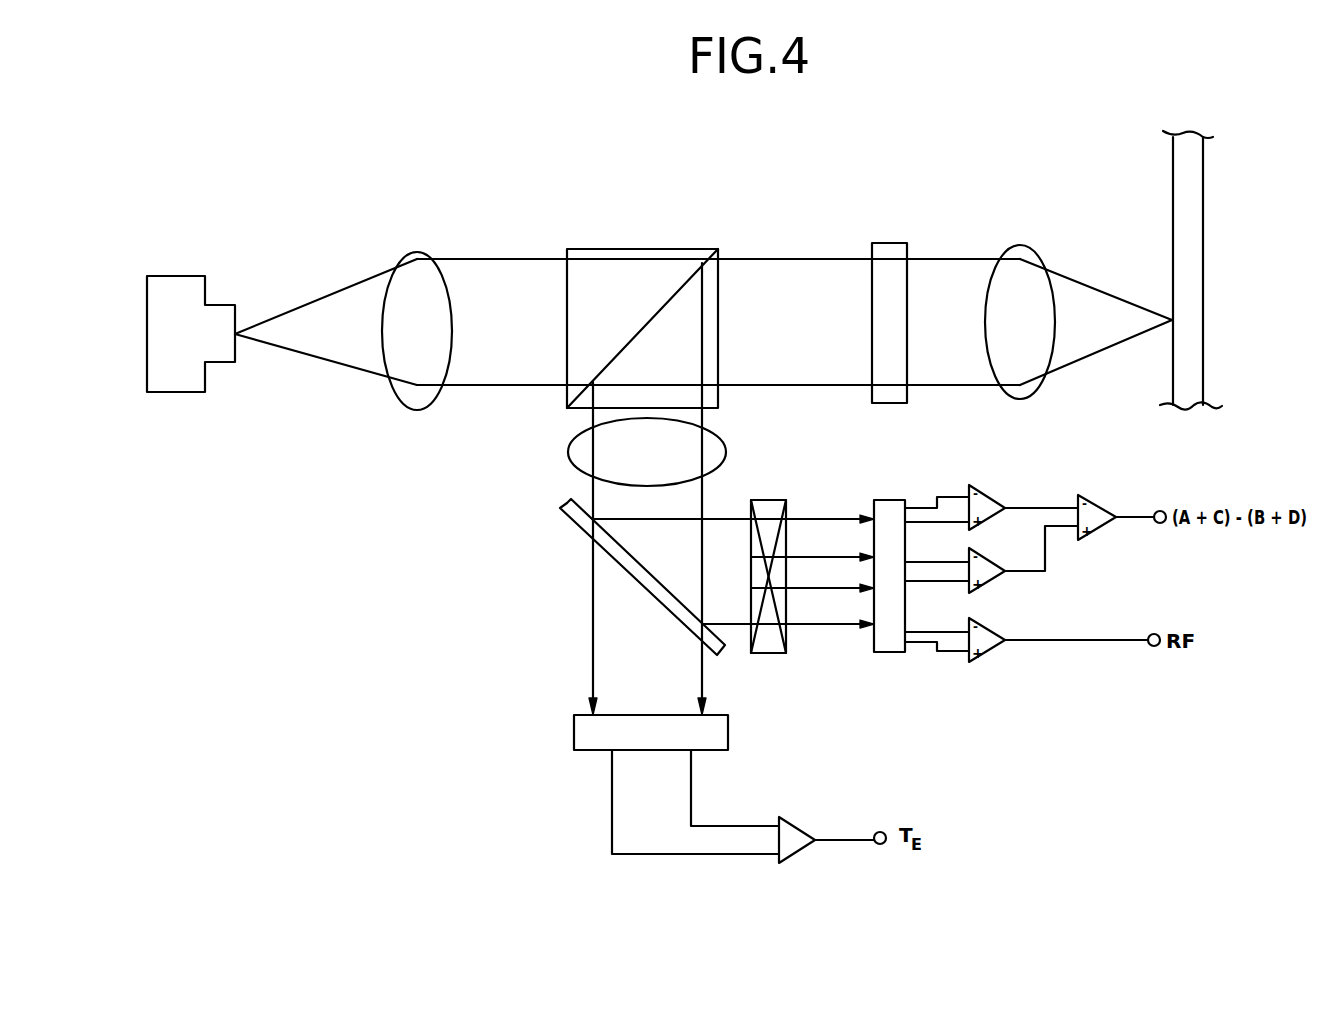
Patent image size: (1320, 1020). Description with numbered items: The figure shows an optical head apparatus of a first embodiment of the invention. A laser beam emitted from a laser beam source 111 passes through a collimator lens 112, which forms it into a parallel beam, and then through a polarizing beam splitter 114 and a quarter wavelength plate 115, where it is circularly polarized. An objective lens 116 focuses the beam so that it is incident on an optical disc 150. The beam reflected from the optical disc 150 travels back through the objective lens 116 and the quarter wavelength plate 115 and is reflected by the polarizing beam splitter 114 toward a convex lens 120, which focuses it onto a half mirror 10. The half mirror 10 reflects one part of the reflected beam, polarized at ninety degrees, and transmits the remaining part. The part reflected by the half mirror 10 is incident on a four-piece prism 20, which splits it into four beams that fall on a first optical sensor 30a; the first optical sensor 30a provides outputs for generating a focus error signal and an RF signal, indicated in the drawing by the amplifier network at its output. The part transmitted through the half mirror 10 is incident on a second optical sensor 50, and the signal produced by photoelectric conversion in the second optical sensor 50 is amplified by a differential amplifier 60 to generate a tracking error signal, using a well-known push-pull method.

The laser beam source 111 is at (155, 276).
The collimator lens 112 is at (414, 252).
The polarizing beam splitter 114 is at (636, 247).
The quarter wavelength plate 115 is at (883, 241).
The objective lens 116 is at (1020, 243).
The optical disc 150 is at (1203, 225).
The convex lens 120 is at (568, 452).
The half mirror 10 is at (572, 524).
The four-piece prism 20 is at (786, 653).
The first optical sensor 30a is at (888, 500).
The second optical sensor 50 is at (574, 733).
The differential amplifier 60 is at (810, 852).